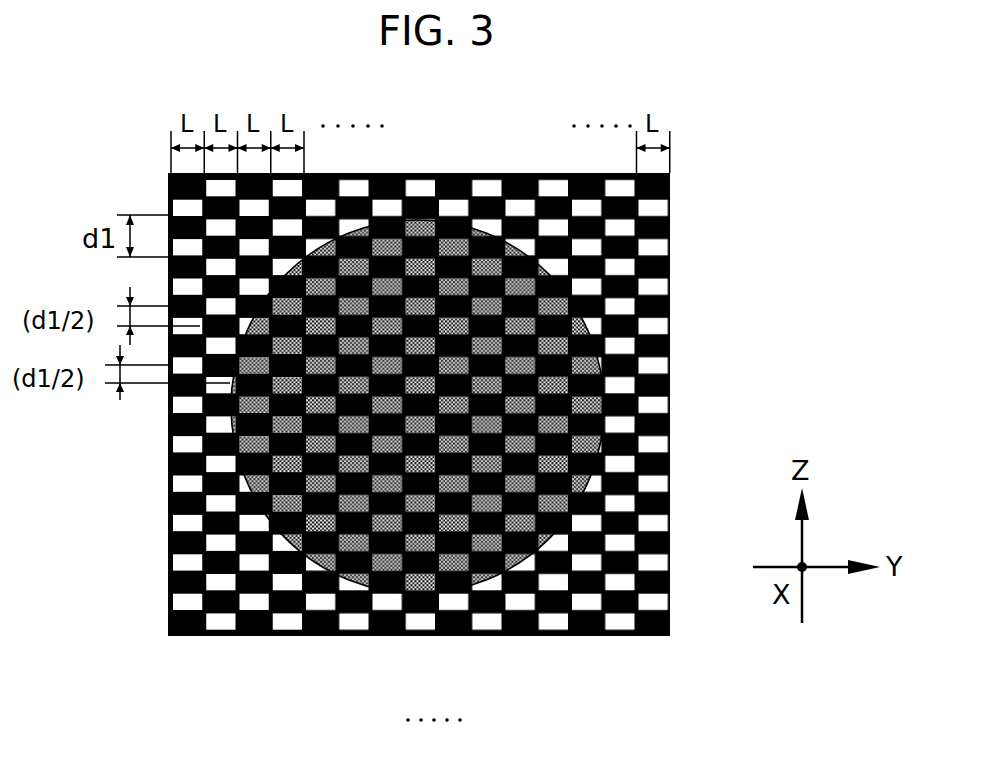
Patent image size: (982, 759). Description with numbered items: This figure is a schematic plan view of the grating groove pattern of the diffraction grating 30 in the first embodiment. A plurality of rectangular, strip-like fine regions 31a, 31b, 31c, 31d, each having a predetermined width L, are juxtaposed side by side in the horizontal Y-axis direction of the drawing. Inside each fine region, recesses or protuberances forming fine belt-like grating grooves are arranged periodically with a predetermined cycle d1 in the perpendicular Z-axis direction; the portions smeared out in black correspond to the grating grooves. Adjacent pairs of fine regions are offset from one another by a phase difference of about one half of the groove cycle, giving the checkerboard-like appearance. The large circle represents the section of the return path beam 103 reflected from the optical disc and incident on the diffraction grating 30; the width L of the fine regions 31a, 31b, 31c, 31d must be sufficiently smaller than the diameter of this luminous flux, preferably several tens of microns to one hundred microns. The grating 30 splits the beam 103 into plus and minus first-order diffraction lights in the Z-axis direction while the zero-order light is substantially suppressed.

The diffraction grating 30 is at (168, 452).
The rectangular fine region 31a is at (171, 637).
The rectangular fine region 31b is at (204, 637).
The rectangular fine region 31c is at (238, 637).
The rectangular fine region 31d is at (271, 637).
The return path beam 103 is at (597, 355).